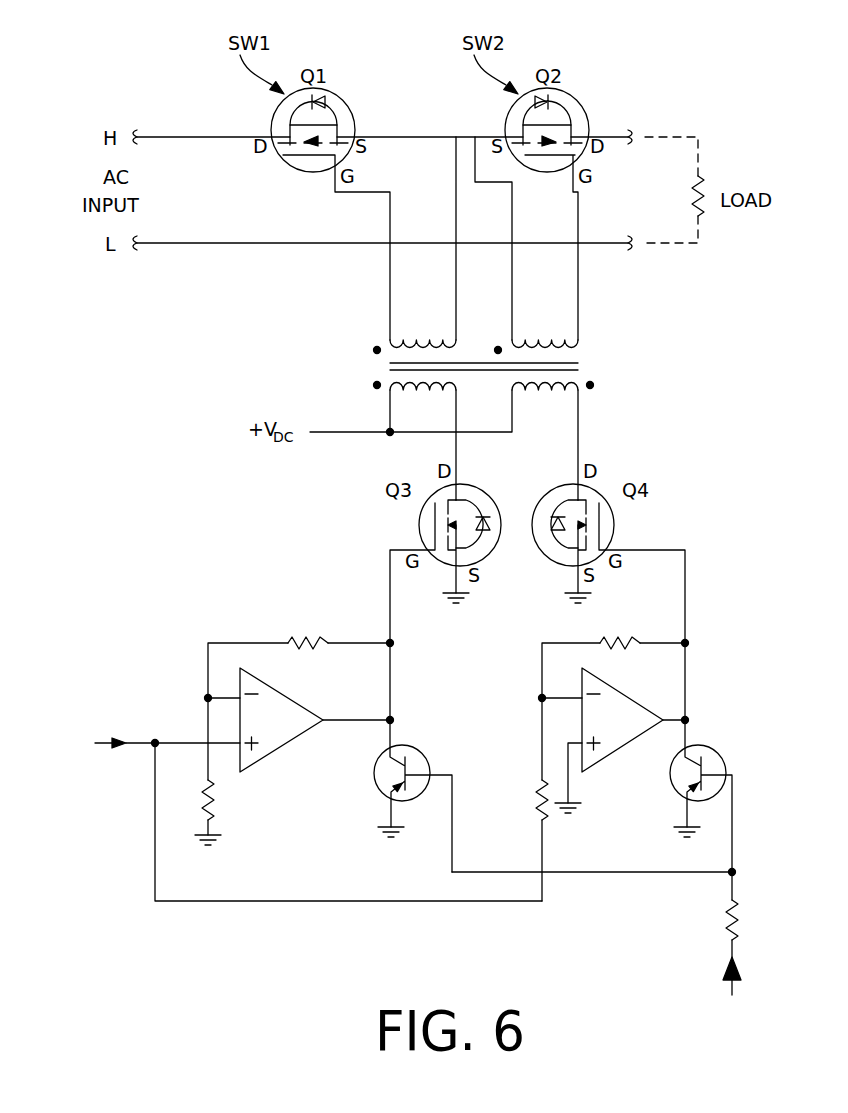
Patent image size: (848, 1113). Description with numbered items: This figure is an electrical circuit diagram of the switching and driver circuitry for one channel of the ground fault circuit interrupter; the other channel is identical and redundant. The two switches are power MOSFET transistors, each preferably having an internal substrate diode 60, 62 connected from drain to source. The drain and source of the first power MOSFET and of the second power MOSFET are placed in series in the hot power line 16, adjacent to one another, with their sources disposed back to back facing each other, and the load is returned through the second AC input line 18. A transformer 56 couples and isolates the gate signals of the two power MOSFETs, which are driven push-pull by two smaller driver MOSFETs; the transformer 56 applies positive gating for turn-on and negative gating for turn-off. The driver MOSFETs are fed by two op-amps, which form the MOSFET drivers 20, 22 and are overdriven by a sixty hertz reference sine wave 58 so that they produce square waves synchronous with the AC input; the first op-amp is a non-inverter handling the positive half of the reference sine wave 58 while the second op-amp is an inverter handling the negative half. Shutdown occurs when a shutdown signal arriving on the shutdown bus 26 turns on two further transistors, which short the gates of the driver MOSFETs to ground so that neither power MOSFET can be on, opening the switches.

The hot power line 16 is at (193, 135).
The AC input neutral line L 18 is at (223, 243).
The MOSFET driver 20 is at (335, 592).
The MOSFET driver 22 is at (735, 547).
The shutdown bus 26 is at (735, 947).
The transformer 56 is at (586, 358).
The reference sine wave 58 is at (90, 708).
The internal substrate diode 60 is at (340, 100).
The internal substrate diode 62 is at (571, 100).